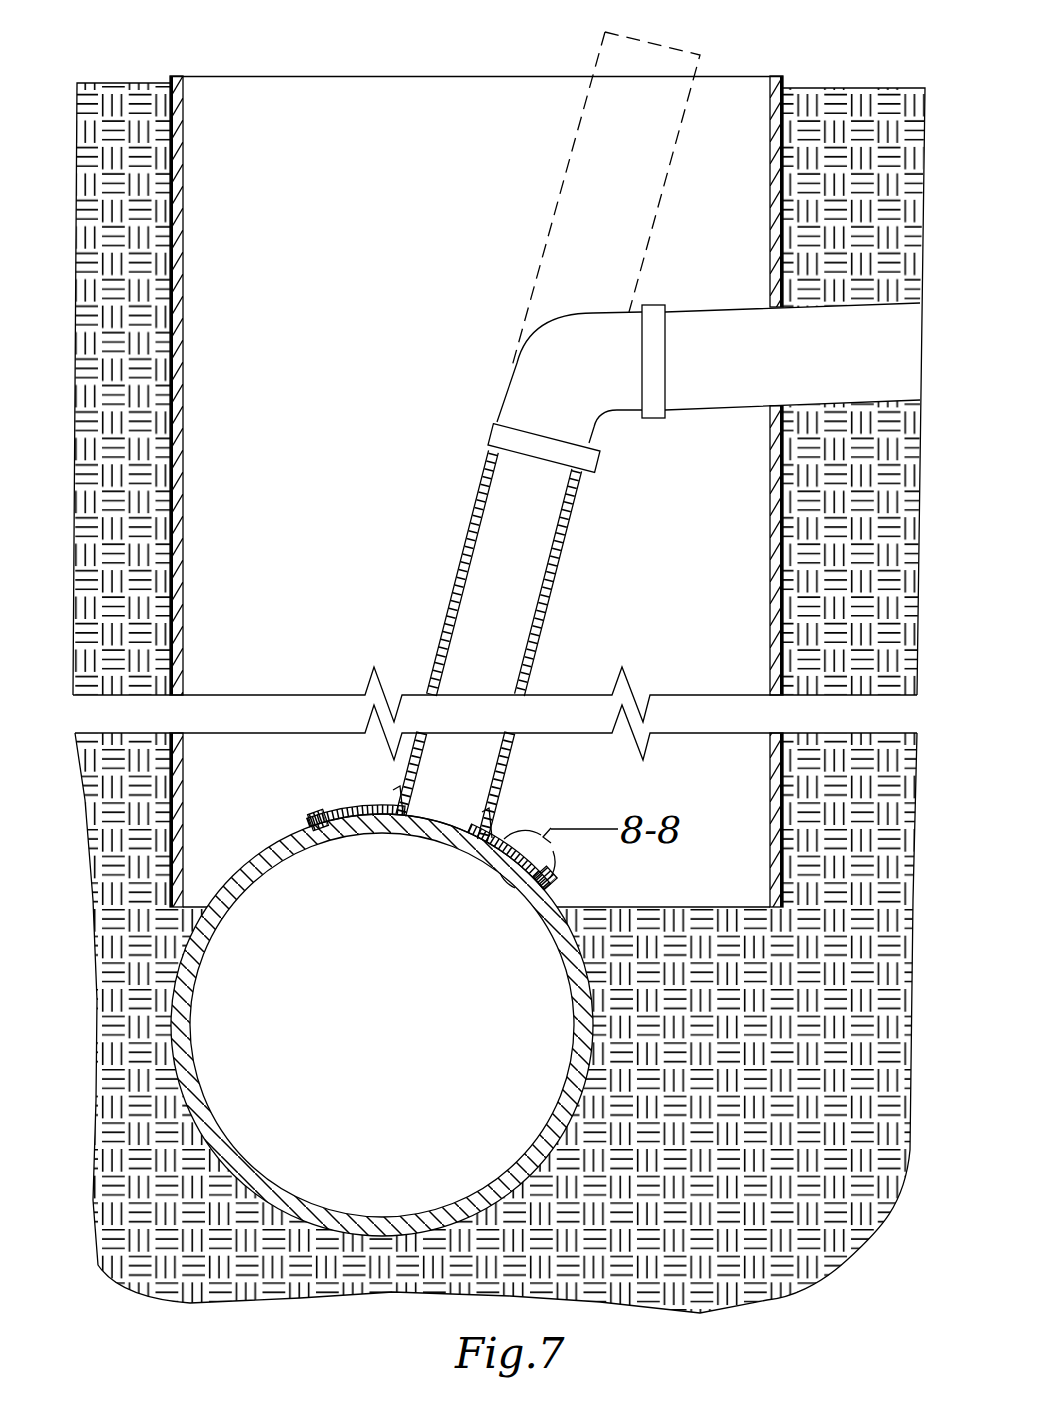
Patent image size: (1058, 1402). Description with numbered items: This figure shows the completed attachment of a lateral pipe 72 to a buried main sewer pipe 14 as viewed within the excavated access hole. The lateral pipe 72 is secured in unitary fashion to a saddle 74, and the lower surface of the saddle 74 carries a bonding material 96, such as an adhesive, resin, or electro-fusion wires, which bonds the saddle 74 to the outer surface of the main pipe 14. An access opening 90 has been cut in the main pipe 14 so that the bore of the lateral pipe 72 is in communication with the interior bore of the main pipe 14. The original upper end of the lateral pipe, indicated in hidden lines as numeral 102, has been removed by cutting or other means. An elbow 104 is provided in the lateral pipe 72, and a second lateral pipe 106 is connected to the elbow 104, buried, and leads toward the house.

The main sewer pipe 14 is at (290, 855).
The lateral pipe 72 is at (448, 593).
The saddle 74 is at (320, 812).
The access opening 90 is at (398, 826).
The bonding material 96 is at (310, 830).
The upper end of lateral pipe 102 is at (565, 178).
The elbow 104 is at (540, 366).
The second lateral pipe 106 is at (742, 306).